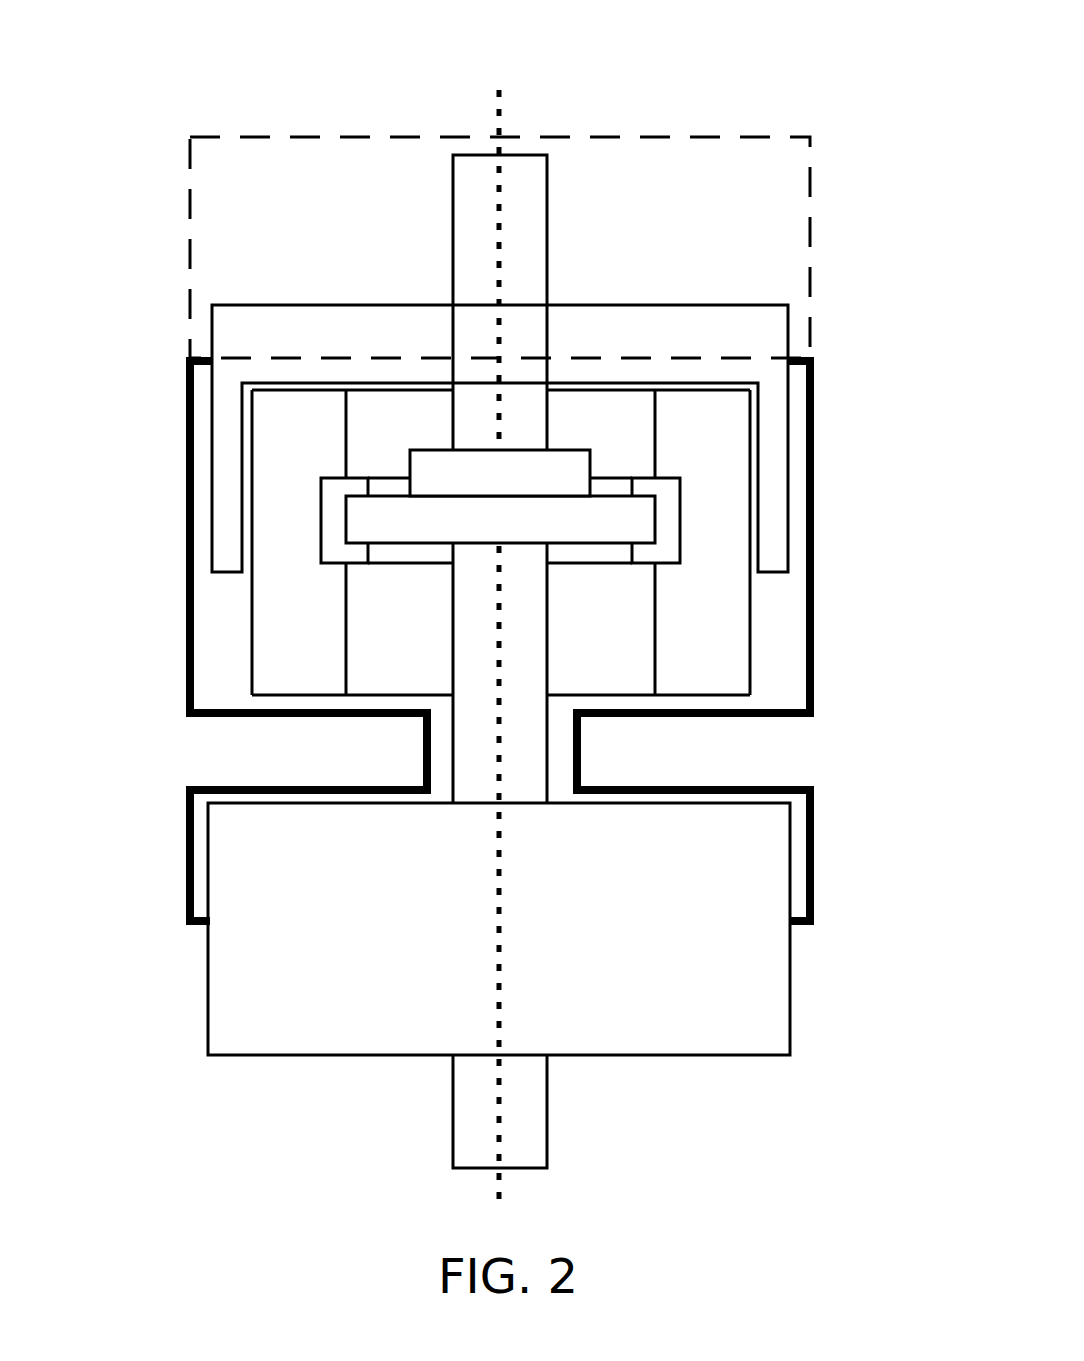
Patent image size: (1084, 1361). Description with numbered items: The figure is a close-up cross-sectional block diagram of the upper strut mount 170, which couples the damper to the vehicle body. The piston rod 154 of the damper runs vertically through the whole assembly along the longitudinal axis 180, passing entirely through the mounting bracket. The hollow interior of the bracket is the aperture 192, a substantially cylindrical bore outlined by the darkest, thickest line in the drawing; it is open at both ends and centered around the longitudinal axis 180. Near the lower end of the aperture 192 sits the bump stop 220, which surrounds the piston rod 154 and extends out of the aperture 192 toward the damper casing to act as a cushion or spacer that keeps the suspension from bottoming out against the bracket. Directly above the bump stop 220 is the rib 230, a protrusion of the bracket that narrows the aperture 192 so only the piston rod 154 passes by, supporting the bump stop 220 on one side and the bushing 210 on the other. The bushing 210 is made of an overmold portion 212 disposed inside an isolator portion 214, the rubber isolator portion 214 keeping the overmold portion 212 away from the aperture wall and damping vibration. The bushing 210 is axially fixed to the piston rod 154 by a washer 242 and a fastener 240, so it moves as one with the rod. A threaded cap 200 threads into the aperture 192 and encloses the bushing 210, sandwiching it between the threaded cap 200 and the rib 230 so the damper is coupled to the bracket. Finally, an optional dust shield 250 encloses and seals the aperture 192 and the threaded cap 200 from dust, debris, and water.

The upper strut mount 170 is at (162, 71).
The piston rod 154 is at (463, 155).
The longitudinal axis 180 is at (500, 103).
The dust shield 250 is at (787, 137).
The threaded cap 200 is at (757, 305).
The aperture 192 is at (816, 467).
The isolator portion 214 is at (295, 445).
The overmold portion 212 is at (333, 507).
The washer 242 is at (378, 526).
The fastener 240 is at (568, 467).
The bushing 210 is at (772, 633).
The rib 230 is at (625, 754).
The bump stop 220 is at (760, 1022).